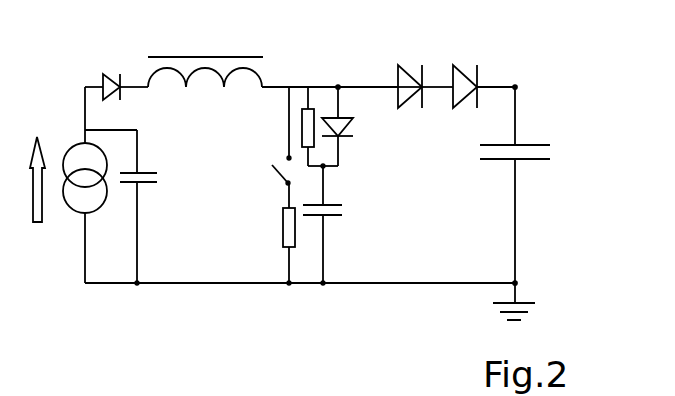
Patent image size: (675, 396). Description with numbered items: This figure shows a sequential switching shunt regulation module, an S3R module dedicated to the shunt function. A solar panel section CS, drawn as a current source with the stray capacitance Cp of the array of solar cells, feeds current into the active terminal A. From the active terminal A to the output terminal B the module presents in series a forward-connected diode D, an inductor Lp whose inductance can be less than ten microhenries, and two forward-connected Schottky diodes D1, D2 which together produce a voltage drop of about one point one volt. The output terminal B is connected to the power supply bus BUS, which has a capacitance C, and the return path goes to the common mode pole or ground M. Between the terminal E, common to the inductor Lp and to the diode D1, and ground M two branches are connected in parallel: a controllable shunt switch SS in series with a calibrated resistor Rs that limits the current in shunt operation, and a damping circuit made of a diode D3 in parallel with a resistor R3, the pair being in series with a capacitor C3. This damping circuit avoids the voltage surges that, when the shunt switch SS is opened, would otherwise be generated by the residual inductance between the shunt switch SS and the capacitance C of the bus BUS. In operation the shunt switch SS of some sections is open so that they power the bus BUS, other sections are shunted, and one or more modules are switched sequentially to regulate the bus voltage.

The solar panel section CS is at (68, 210).
The active terminal A is at (70, 115).
The forward-connected diode D is at (116, 72).
The inductor Lp is at (205, 55).
The stray capacitance Cp is at (127, 206).
The common terminal E is at (300, 80).
The controllable shunt switch SS is at (263, 164).
The calibrated resistor Rs is at (271, 245).
The resistor R3 is at (316, 117).
The diode D3 is at (354, 125).
The capacitor C3 is at (336, 224).
The forward-connected Schottky diode D1 is at (406, 72).
The forward-connected Schottky diode D2 is at (461, 72).
The output terminal B is at (523, 76).
The power supply bus BUS is at (515, 112).
The bus capacitance C is at (531, 214).
The ground M is at (498, 309).